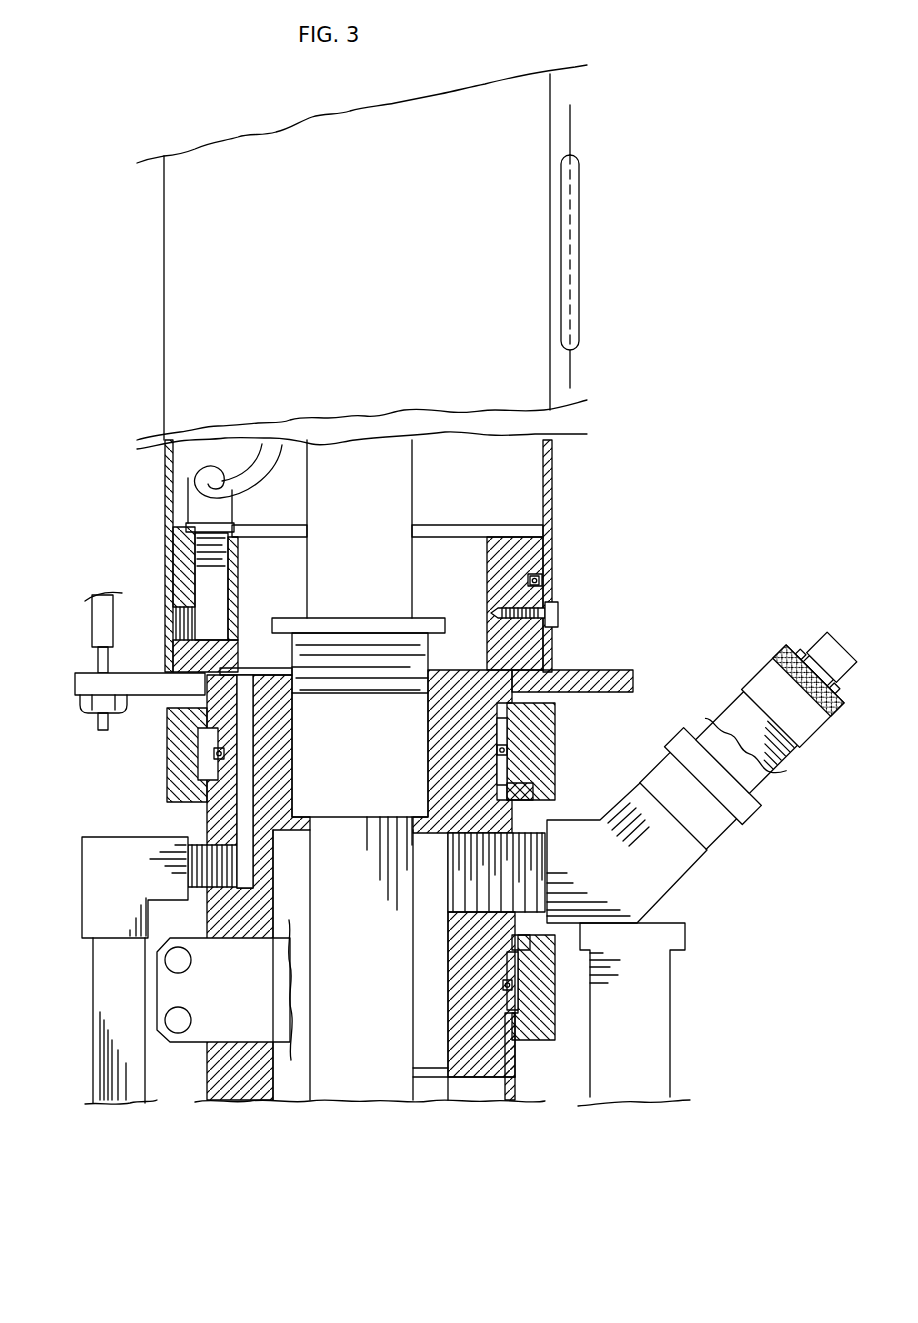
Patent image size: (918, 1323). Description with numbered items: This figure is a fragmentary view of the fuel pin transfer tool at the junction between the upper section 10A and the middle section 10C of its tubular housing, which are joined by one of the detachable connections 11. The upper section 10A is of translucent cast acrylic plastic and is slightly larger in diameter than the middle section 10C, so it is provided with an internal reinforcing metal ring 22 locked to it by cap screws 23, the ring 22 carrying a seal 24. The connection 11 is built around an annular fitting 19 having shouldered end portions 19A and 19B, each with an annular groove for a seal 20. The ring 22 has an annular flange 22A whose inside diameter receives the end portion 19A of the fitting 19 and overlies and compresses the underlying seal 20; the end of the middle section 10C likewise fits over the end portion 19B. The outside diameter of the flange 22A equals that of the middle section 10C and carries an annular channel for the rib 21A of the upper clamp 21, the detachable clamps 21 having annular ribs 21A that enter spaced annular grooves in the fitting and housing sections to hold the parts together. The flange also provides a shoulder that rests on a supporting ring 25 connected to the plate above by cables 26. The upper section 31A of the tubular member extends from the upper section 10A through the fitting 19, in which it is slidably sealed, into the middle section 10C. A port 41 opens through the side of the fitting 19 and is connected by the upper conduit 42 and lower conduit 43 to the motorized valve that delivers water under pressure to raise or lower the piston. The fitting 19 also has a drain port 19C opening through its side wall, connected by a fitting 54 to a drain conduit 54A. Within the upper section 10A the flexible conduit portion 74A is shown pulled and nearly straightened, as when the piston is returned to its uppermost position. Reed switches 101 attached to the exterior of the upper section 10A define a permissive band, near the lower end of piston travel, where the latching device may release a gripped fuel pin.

The upper section 10A is at (163, 283).
The reed switches 101 is at (586, 266).
The conduit portion 74A is at (190, 466).
The upper section 31A is at (382, 572).
The reinforcing metal ring 22 is at (537, 556).
The seal 24 is at (542, 580).
The cap screws 23 is at (560, 606).
The shouldered end portion 19A is at (452, 677).
The annular fitting 19 is at (540, 811).
The annular flange 22A is at (510, 703).
The detachable clamps 21 is at (168, 775).
The annular ribs 21A is at (540, 794).
The seal 20 is at (552, 752).
The drain port 19C is at (247, 815).
The cables 26 is at (92, 620).
The supporting ring 25 is at (137, 698).
The fitting 54 is at (82, 842).
The drain conduit 54A is at (95, 1083).
The detachable connections 11 is at (563, 734).
The port 41 is at (455, 885).
The shouldered end portion 19B is at (452, 1066).
The middle section 10C is at (528, 1090).
The upper conduit 42 is at (712, 822).
The lower conduit 43 is at (663, 1071).